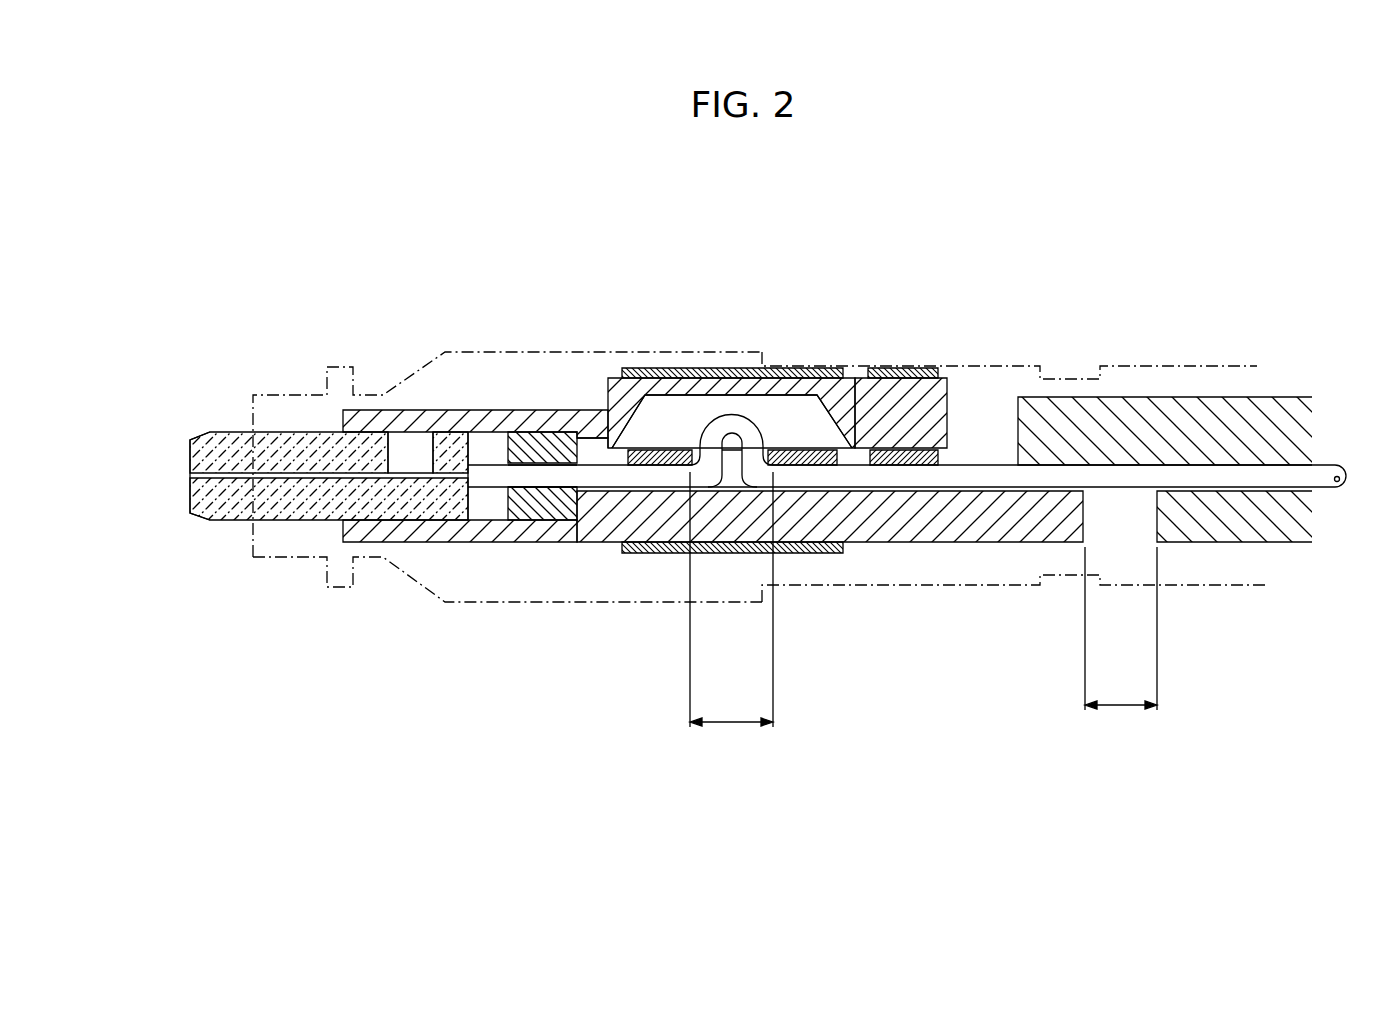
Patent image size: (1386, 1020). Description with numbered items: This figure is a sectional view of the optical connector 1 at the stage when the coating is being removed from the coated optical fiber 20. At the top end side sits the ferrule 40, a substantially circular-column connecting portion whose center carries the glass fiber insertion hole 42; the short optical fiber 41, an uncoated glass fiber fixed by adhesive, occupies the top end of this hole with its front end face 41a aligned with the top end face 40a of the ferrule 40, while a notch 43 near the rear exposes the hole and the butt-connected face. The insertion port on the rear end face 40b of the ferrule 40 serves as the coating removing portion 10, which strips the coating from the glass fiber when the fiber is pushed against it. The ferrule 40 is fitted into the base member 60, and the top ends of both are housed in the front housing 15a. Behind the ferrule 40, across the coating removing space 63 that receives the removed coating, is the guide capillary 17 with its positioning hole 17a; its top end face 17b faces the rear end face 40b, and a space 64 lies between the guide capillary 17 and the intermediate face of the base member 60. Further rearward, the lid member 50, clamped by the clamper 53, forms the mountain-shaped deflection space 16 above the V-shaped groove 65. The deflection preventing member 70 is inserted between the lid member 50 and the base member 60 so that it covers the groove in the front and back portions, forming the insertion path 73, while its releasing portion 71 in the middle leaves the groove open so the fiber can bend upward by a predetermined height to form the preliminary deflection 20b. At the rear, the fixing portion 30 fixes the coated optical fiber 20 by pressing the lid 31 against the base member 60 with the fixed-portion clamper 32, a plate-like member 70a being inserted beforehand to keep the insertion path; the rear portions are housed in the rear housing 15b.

The optical connector 1 is at (827, 262).
The coating removing portion 10 is at (713, 542).
The front housing 15a is at (570, 350).
The rear housing 15b is at (927, 363).
The deflection space 16 is at (663, 413).
The guide capillary 17 is at (512, 561).
The positioning hole 17a is at (555, 475).
The top end face of the guide capillary 17b is at (485, 505).
The coated optical fiber 20 is at (917, 446).
The preliminary deflection 20b is at (734, 446).
The fixing portion 30 is at (949, 358).
The lid 31 is at (895, 343).
The fixed-portion clamper 32 is at (905, 372).
The ferrule 40 is at (300, 459).
The top end face of the ferrule 40a is at (190, 455).
The rear end face of the ferrule 40b is at (470, 453).
The short optical fiber 41 is at (237, 472).
The front end face of the short optical fiber 41a is at (190, 478).
The glass fiber insertion hole 42 is at (288, 449).
The notch 43 is at (412, 440).
The lid member 50 is at (865, 380).
The clamper 53 is at (708, 374).
The base member 60 is at (753, 469).
The coating removing space 63 is at (462, 521).
The space 64 is at (602, 455).
The V-shaped groove 65 is at (660, 465).
The deflection preventing member 70 is at (814, 564).
The plate-like member 70a is at (917, 465).
The releasing portion 71 is at (718, 472).
The insertion path 73 is at (818, 518).